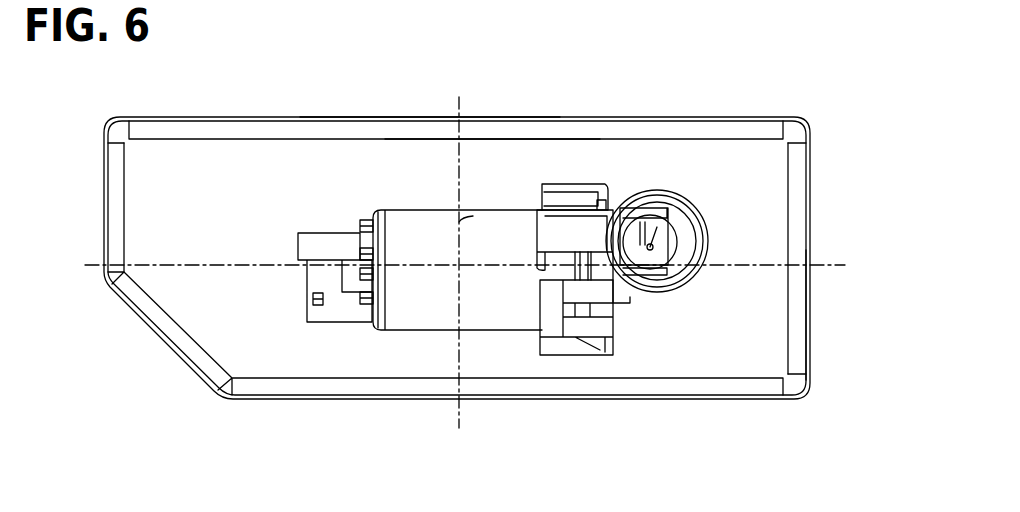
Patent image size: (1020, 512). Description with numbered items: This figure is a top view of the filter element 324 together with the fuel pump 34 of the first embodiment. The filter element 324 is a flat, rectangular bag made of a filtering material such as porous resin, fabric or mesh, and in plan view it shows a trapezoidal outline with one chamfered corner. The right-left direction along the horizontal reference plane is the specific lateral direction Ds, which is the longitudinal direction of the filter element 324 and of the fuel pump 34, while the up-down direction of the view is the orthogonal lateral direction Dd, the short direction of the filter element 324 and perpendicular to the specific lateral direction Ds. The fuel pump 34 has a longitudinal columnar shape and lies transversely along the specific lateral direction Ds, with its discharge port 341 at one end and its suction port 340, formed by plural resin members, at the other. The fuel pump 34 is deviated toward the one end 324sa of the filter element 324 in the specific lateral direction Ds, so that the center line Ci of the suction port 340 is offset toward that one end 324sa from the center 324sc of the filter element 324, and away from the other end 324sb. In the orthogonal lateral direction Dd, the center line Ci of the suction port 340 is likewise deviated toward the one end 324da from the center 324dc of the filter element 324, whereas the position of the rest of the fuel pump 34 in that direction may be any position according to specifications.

The filter element 324 is at (233, 160).
The one end of the filter element in the specific lateral direction 324sa is at (807, 242).
The other end of the filter element in the specific lateral direction 324sb is at (107, 218).
The center of the filter element in the specific lateral direction 324sc is at (480, 211).
The one end of the filter element in the orthogonal lateral direction 324da is at (423, 116).
The center of the filter element in the orthogonal lateral direction 324dc is at (828, 266).
The fuel pump 34 is at (373, 208).
The discharge port 341 is at (317, 240).
The suction port 340 is at (708, 234).
The center line of the suction port Ci is at (651, 244).
The specific lateral direction Ds is at (497, 455).
The orthogonal lateral direction Dd is at (868, 222).